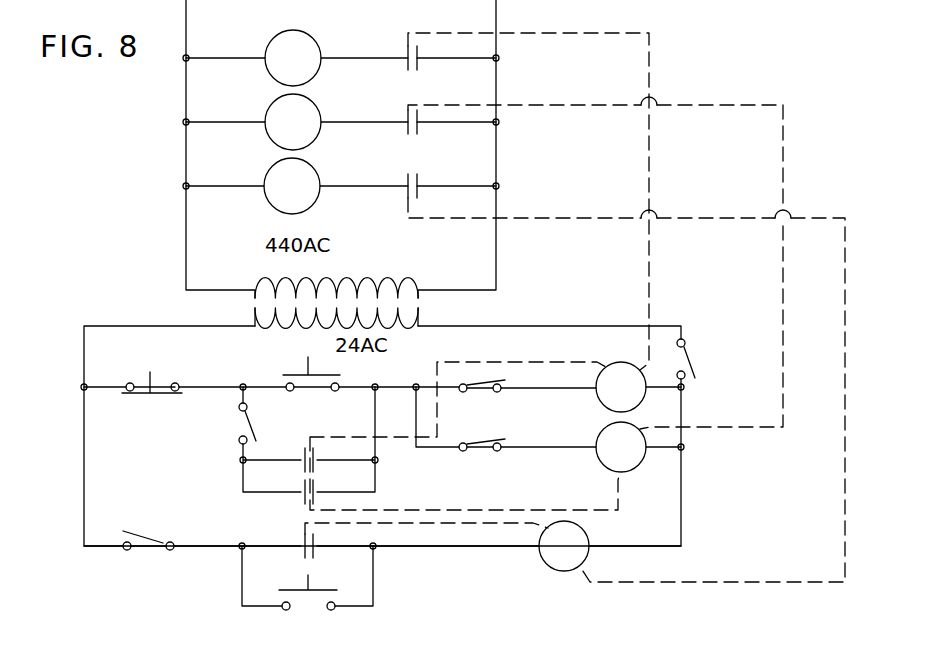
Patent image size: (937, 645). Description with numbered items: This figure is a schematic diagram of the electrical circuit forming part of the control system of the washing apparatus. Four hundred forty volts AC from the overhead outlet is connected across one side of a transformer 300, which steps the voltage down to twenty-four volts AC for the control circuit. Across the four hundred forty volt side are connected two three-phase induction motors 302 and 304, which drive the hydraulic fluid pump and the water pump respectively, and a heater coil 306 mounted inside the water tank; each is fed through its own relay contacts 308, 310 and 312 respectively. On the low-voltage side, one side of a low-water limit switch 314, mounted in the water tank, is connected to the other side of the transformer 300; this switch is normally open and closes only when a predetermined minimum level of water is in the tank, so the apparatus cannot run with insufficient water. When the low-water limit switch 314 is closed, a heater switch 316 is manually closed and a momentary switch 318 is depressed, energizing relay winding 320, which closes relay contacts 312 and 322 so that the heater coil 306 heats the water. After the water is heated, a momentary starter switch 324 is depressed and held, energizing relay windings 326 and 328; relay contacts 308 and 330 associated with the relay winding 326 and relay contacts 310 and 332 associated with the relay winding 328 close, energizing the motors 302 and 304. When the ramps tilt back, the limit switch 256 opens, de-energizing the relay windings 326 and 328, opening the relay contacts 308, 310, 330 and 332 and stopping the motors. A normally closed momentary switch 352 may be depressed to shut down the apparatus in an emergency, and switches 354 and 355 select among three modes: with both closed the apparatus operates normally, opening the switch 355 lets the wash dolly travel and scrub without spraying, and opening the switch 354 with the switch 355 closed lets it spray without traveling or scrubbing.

The limit switch 256 is at (247, 423).
The transformer 300 is at (267, 303).
The three-phase induction motor 302 is at (276, 36).
The three-phase induction motor 304 is at (269, 108).
The heater coil 306 is at (267, 171).
The relay contacts 308 is at (406, 52).
The relay contacts 310 is at (406, 118).
The relay contacts 312 is at (406, 180).
The low-water limit switch 314 is at (696, 365).
The heater switch 316 is at (145, 550).
The momentary switch 318 is at (308, 604).
The relay winding 320 is at (540, 560).
The relay contacts 322 is at (300, 542).
The momentary starter switch 324 is at (300, 372).
The relay winding 326 is at (618, 362).
The relay winding 328 is at (600, 466).
The relay contacts 330 is at (304, 456).
The relay contacts 332 is at (304, 494).
The normally closed momentary switch 352 is at (141, 382).
The switch 354 is at (480, 386).
The switch 355 is at (482, 452).